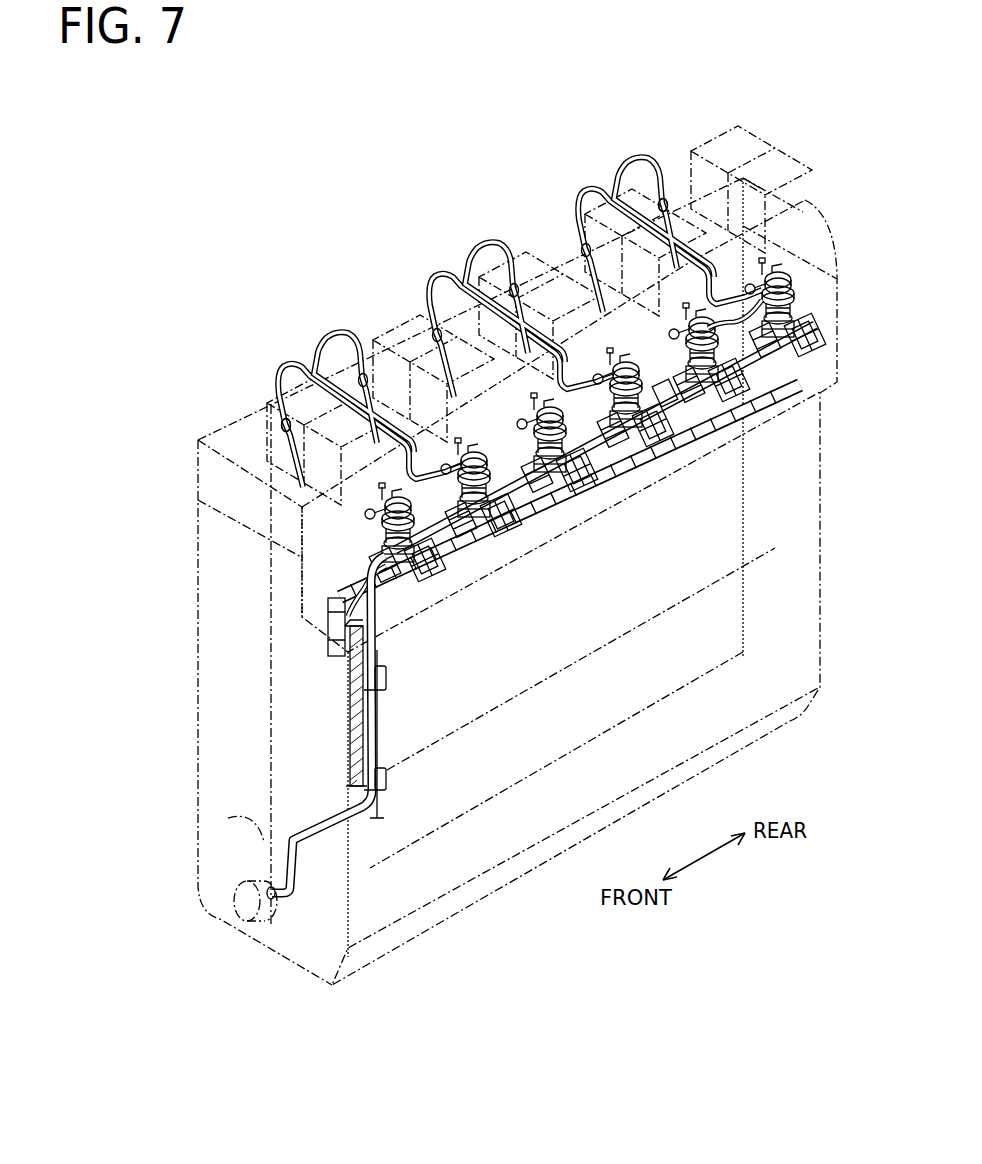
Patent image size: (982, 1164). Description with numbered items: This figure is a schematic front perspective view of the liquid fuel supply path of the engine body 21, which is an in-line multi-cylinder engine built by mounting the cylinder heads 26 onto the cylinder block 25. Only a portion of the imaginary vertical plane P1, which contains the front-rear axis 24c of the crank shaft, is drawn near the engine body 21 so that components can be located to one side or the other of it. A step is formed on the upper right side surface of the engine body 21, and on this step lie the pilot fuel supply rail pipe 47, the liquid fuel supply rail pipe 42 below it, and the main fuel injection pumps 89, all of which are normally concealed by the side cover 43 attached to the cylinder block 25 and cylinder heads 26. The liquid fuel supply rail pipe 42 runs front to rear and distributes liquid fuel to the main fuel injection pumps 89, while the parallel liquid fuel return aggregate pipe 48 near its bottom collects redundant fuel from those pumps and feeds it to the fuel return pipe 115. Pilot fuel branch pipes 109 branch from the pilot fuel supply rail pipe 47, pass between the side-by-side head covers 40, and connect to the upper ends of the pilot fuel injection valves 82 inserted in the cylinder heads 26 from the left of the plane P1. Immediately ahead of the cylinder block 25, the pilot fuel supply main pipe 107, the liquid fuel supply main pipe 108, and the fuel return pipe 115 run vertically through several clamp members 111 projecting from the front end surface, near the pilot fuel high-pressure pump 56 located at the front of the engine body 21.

The engine body 21 is at (237, 168).
The axis of the crank shaft 24c is at (263, 842).
The cylinder block 25 is at (194, 699).
The cylinder heads 26 is at (186, 476).
The head covers 40 is at (266, 428).
The liquid fuel supply rail pipe 42 is at (530, 500).
The side cover 43 is at (838, 295).
The pilot fuel supply rail pipe 47 is at (666, 395).
The liquid fuel return aggregate pipe 48 is at (548, 505).
The pilot fuel high-pressure pump 56 is at (243, 922).
The pilot fuel injection valves 82 is at (265, 422).
The main fuel injection pumps 89 is at (365, 540).
The pilot fuel supply main pipe 107 is at (384, 712).
The liquid fuel supply main pipe 108 is at (348, 704).
The pilot fuel branch pipes 109 is at (328, 330).
The clamp members 111 is at (387, 683).
The fuel return pipe 115 is at (348, 740).
The imaginary vertical plane P1 is at (748, 184).